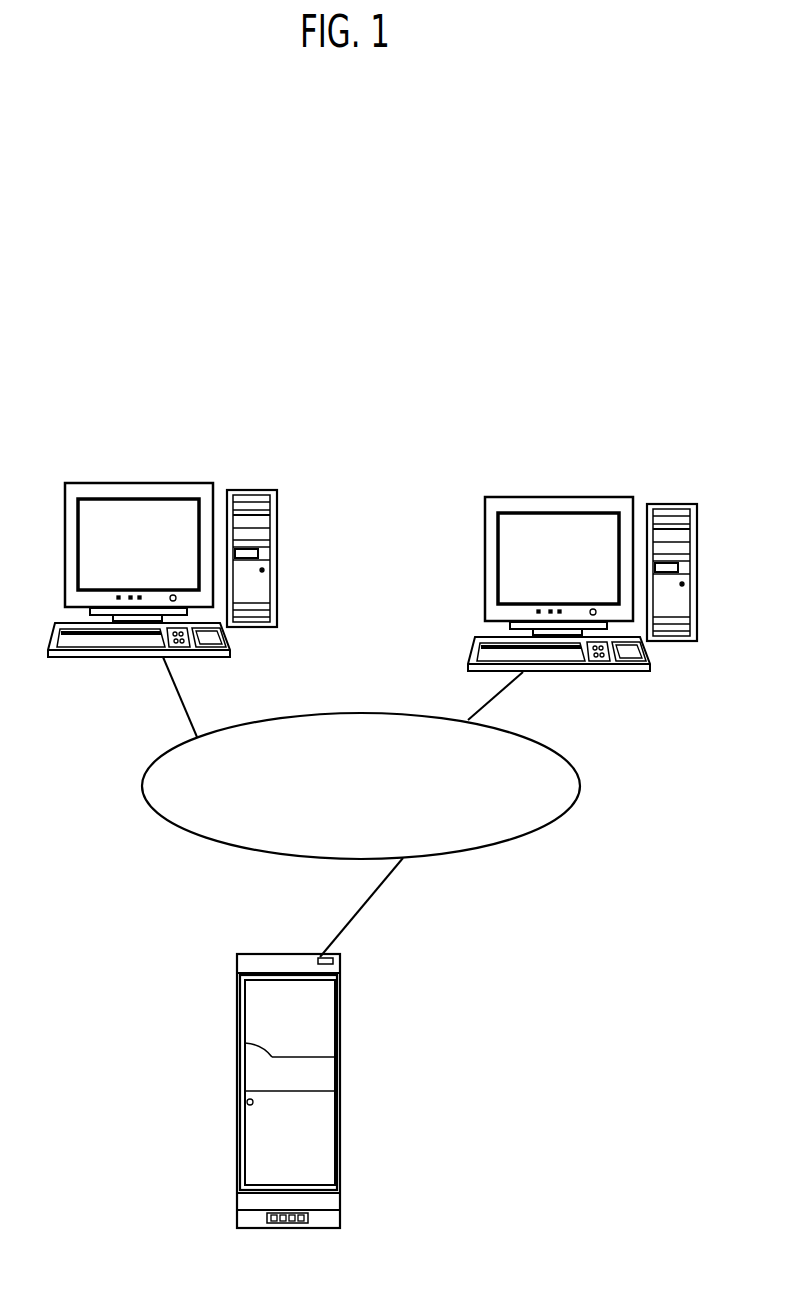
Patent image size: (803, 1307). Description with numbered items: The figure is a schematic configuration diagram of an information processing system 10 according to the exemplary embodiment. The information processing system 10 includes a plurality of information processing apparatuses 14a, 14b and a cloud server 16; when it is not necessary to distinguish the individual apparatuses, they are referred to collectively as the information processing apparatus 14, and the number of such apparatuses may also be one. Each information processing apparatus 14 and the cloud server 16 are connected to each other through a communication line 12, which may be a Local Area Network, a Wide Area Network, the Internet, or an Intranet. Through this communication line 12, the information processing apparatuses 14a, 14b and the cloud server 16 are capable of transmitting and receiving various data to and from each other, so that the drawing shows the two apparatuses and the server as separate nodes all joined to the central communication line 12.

The information processing system 10 is at (498, 379).
The communication line 12 is at (578, 768).
The information processing apparatus 14 is at (372, 531).
The information processing apparatus 14a is at (140, 480).
The information processing apparatus 14b is at (595, 499).
The cloud server 16 is at (300, 968).